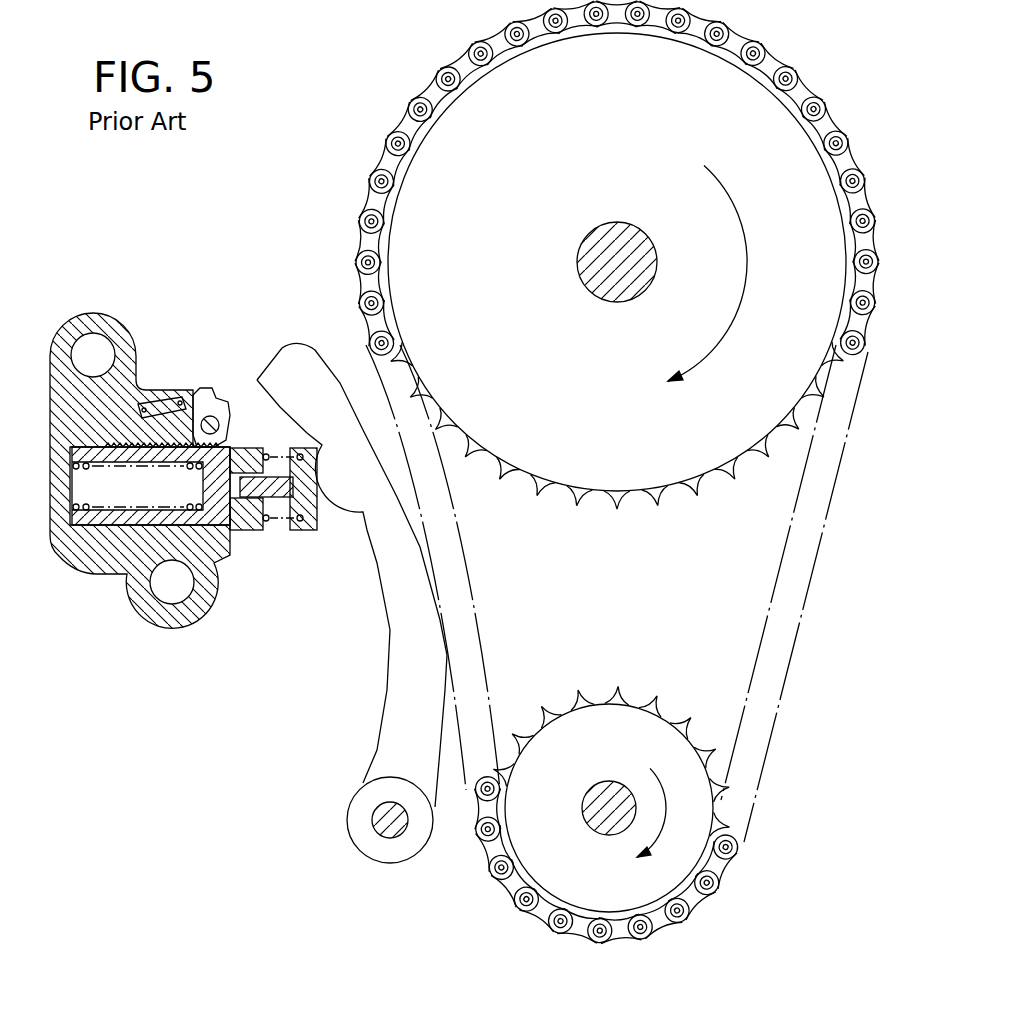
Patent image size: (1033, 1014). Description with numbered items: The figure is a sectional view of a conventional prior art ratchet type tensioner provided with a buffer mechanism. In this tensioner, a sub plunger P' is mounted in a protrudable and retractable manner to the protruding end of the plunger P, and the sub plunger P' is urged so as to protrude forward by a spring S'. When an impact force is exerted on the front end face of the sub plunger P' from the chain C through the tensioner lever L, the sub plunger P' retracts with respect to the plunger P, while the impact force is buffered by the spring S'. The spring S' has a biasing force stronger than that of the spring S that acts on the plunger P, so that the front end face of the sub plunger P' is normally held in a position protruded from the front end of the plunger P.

The chain C is at (369, 181).
The spring S is at (103, 486).
The plunger P is at (161, 543).
The spring S' is at (283, 535).
The sub plunger P' is at (289, 519).
The tensioner lever L is at (403, 633).